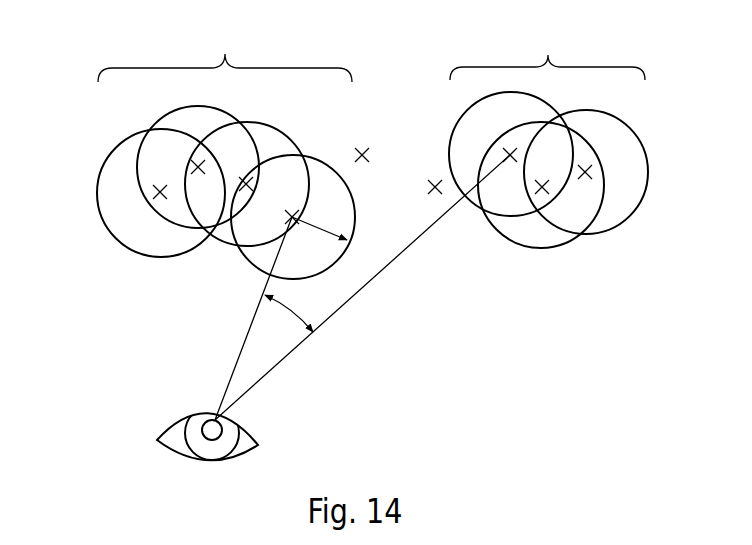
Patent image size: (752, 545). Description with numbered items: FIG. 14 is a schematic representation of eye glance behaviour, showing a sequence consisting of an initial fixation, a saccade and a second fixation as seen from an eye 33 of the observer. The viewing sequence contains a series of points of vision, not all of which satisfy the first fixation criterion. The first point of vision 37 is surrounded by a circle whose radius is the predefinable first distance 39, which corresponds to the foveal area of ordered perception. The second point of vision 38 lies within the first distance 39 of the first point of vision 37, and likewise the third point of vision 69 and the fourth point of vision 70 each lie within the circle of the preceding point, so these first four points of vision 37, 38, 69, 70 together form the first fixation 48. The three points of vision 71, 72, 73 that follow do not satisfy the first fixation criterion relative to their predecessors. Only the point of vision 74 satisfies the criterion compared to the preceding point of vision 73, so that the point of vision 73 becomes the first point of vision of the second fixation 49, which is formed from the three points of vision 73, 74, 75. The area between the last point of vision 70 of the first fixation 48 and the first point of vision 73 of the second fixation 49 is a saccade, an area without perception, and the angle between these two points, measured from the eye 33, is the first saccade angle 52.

The eye of the user 33 is at (178, 433).
The first point of vision 37 is at (155, 191).
The second point of vision 38 is at (190, 175).
The first distance 39 is at (319, 221).
The first fixation 48 is at (225, 53).
The second fixation 49 is at (547, 54).
The first saccade angle 52 is at (290, 313).
The third point of vision 69 is at (240, 183).
The last point of vision of the first fixation 70 is at (293, 212).
The point of vision 71 is at (363, 150).
The point of vision 72 is at (438, 183).
The first point of vision of the second fixation 73 is at (507, 162).
The fourth point of vision following the first fixation 74 is at (545, 192).
The point of vision 75 is at (590, 172).